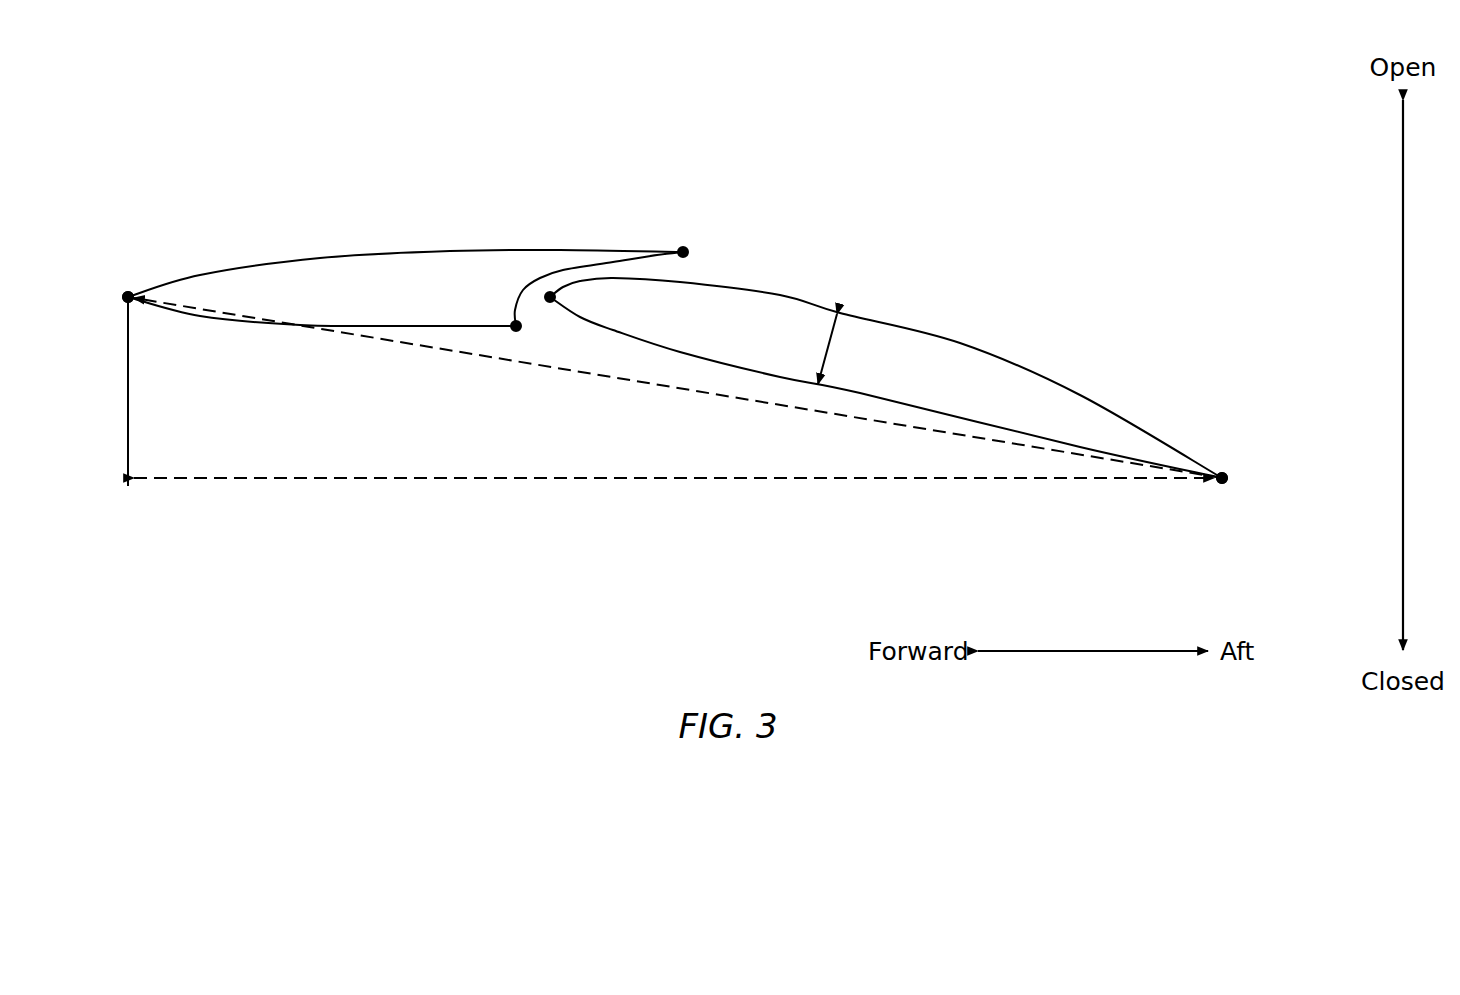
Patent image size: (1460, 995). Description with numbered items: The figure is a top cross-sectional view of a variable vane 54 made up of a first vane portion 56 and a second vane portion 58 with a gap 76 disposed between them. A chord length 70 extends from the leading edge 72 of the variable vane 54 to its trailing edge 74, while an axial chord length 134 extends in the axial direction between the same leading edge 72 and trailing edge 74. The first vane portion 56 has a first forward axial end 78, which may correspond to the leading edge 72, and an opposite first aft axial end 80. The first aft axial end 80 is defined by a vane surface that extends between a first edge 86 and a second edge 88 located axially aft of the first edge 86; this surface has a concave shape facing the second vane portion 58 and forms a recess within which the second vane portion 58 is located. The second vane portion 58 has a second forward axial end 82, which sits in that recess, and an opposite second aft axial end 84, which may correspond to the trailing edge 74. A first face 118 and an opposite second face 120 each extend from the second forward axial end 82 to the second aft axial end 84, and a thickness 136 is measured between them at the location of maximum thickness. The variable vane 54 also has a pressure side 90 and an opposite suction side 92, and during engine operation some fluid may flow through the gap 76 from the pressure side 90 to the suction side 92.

The variable vane 54 is at (868, 193).
The first vane portion 56 is at (372, 240).
The second vane portion 58 is at (945, 298).
The chord length 70 is at (763, 405).
The leading edge 72 is at (128, 297).
The trailing edge 74 is at (1224, 478).
The gap 76 is at (536, 300).
The first forward axial end 78 is at (128, 297).
The first aft axial end 80 is at (556, 270).
The second forward axial end 82 is at (555, 297).
The second aft axial end 84 is at (1224, 478).
The first edge 86 is at (517, 332).
The second edge 88 is at (683, 252).
The pressure side 90 is at (650, 366).
The suction side 92 is at (617, 232).
The first face 118 is at (833, 395).
The second face 120 is at (962, 342).
The axial chord length 134 is at (367, 480).
The thickness 136 is at (828, 348).